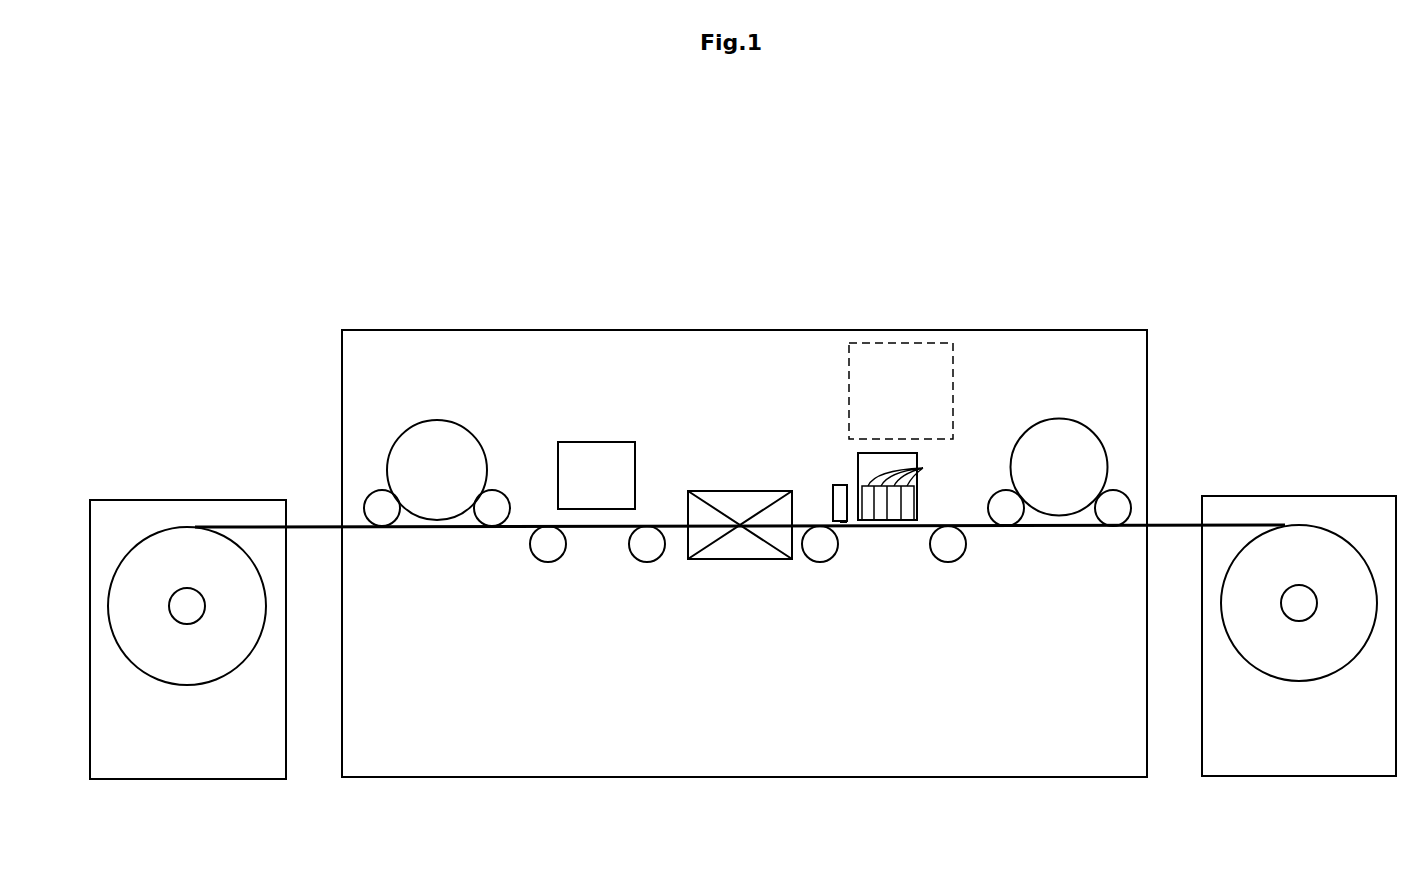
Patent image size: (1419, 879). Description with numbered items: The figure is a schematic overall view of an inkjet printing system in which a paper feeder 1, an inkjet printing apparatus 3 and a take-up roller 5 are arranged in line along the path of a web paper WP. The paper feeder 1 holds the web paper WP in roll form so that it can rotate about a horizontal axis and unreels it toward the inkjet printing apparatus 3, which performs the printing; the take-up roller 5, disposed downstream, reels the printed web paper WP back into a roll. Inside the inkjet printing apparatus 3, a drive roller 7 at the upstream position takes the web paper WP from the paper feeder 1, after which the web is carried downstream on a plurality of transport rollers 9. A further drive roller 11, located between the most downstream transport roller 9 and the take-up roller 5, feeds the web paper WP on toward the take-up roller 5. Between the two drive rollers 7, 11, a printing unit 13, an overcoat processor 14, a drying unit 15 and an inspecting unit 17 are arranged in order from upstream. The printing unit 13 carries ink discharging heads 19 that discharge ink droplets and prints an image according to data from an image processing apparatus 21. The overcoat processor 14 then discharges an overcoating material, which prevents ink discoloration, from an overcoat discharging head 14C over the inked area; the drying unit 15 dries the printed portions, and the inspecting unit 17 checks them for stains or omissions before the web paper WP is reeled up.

The paper feeder 1 is at (1292, 493).
The inkjet printing apparatus 3 is at (672, 327).
The take-up roller 5 is at (203, 494).
The drive roller 7 is at (1092, 423).
The transport rollers 9 is at (550, 562).
The drive roller 11 is at (468, 424).
The printing unit 13 is at (858, 465).
The overcoat processor 14 is at (833, 495).
The overcoat discharging head 14C is at (845, 522).
The drying unit 15 is at (735, 491).
The inspecting unit 17 is at (578, 442).
The ink discharging heads 19 is at (908, 465).
The image processing apparatus 21 is at (953, 392).
The web paper WP is at (150, 535).